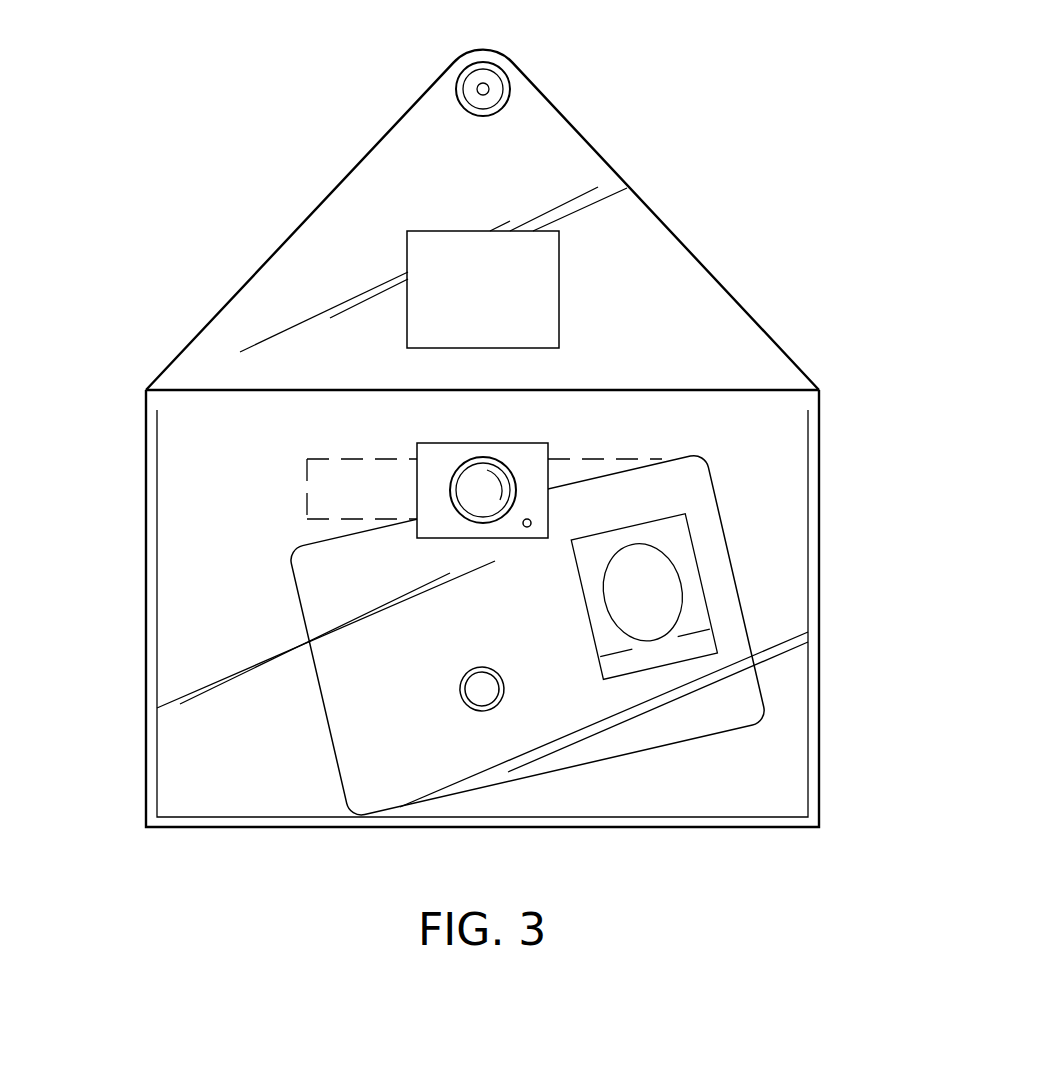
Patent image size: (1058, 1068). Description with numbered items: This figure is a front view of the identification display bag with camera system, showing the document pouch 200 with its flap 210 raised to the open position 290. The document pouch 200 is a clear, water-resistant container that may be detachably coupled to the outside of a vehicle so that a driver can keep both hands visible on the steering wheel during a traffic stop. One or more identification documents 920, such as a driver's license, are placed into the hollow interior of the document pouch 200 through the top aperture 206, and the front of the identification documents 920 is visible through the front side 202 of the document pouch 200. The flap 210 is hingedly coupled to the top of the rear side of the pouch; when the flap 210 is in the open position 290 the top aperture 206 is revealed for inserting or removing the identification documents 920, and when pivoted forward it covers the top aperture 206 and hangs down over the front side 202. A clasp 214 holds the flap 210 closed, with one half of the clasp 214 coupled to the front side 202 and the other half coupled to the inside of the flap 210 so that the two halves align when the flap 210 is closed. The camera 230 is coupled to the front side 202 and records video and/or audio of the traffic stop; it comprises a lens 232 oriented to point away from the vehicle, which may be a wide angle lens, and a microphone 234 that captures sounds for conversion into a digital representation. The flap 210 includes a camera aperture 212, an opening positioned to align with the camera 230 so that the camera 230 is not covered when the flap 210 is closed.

The open position 290 is at (488, 459).
The flap 210 is at (270, 258).
The clasp 214 is at (499, 72).
The camera aperture 212 is at (559, 280).
The top aperture 206 is at (697, 388).
The document pouch 200 is at (146, 630).
The front side 202 is at (793, 443).
The identification documents 920 is at (322, 742).
The camera 230 is at (427, 491).
The lens 232 is at (497, 488).
The microphone 234 is at (531, 527).